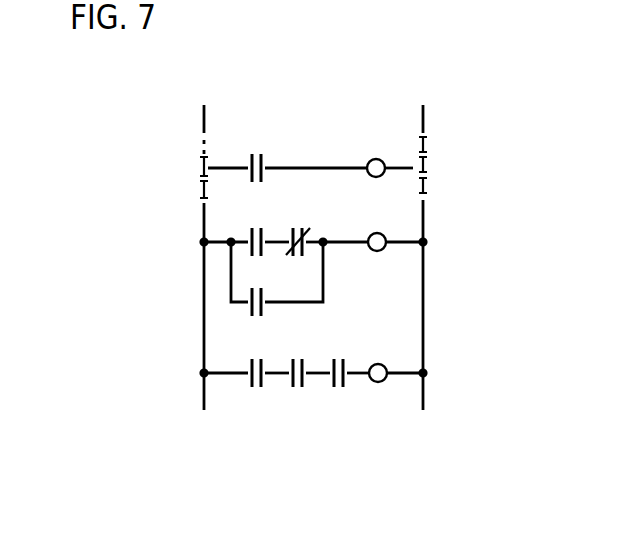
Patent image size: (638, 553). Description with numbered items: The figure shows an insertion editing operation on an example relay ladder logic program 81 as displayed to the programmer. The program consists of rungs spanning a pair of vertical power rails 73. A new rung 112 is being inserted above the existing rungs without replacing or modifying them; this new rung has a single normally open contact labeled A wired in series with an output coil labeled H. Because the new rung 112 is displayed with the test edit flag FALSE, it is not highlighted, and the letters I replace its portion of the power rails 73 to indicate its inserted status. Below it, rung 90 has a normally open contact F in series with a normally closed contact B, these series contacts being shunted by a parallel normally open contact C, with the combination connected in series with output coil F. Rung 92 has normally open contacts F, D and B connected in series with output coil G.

The power rails 73 is at (201, 120).
The relay ladder logic program 81 is at (444, 126).
The new rung 112 is at (403, 166).
The rung 90 is at (400, 246).
The rung 92 is at (401, 378).